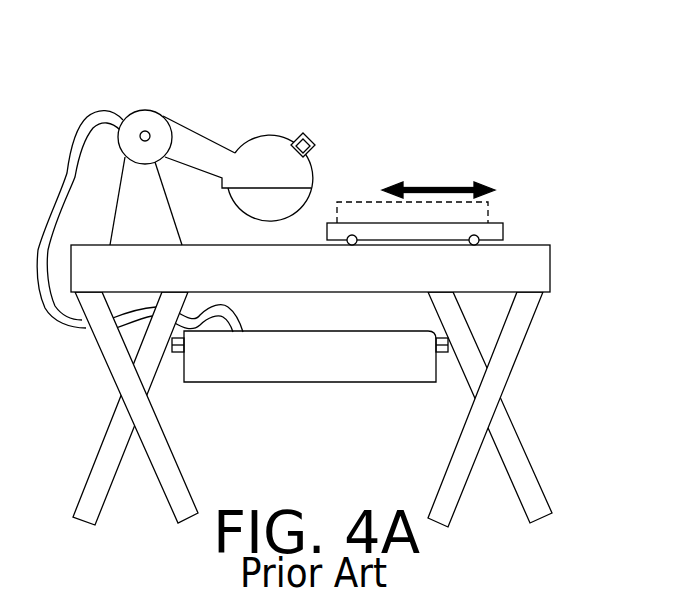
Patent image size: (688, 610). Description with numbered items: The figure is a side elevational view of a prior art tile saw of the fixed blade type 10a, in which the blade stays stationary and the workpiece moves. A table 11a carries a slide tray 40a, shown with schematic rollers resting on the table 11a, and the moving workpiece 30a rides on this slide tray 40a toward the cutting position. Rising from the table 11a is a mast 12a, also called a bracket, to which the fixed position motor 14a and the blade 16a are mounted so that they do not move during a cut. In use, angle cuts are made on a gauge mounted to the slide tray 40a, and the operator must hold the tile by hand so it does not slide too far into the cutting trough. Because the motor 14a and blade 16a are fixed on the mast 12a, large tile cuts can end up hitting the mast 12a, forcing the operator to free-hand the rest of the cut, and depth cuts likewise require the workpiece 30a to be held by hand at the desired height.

The fixed blade type saw 10a is at (114, 88).
The table 11a is at (530, 275).
The mast 12a is at (156, 217).
The fixed position motor 14a is at (153, 119).
The blade 16a is at (286, 202).
The moving workpiece 30a is at (490, 220).
The slide tray 40a is at (497, 233).